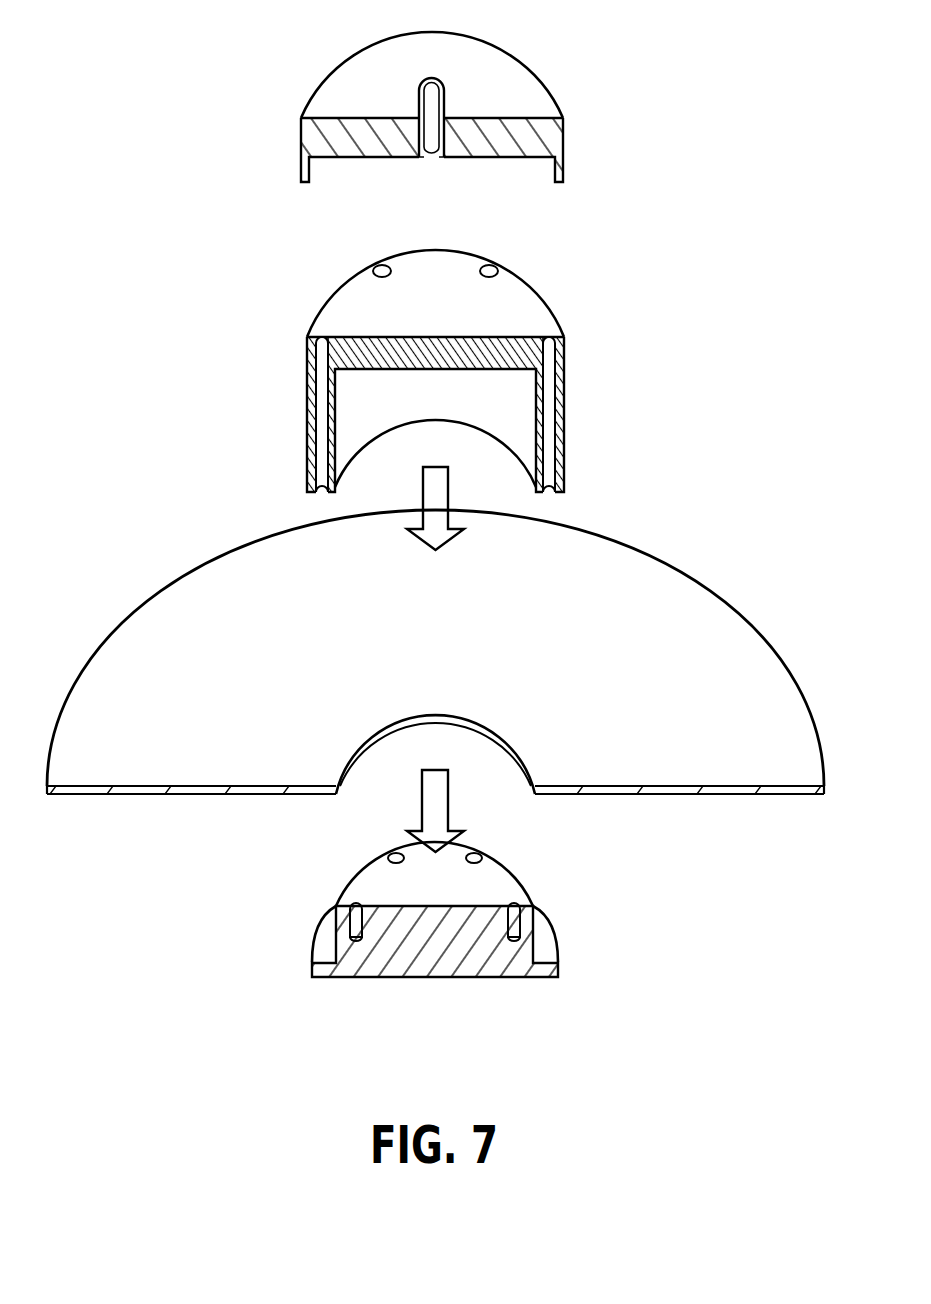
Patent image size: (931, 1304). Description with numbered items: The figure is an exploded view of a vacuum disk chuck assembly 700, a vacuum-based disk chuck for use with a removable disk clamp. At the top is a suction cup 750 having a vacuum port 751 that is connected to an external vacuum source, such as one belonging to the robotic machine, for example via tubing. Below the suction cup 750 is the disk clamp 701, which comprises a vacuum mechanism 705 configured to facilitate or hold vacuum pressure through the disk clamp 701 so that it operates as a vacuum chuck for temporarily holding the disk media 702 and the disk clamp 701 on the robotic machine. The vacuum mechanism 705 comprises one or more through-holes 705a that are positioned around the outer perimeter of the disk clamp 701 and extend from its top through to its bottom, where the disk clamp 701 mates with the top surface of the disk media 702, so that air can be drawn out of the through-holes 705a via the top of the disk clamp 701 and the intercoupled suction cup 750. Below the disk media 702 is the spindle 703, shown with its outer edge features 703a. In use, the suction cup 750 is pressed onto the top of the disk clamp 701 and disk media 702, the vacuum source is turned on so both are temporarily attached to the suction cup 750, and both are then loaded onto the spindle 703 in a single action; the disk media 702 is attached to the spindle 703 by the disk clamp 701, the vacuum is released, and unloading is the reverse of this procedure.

The vacuum disk chuck assembly 700 is at (240, 76).
The suction cup 750 is at (517, 90).
The vacuum port 751 is at (432, 85).
The disk clamp 701 is at (326, 313).
The through-holes 705a is at (490, 265).
The vacuum mechanism 705 is at (318, 497).
The disk media 702 is at (723, 751).
The spindle 703 is at (431, 977).
The base lips 703a is at (322, 982).